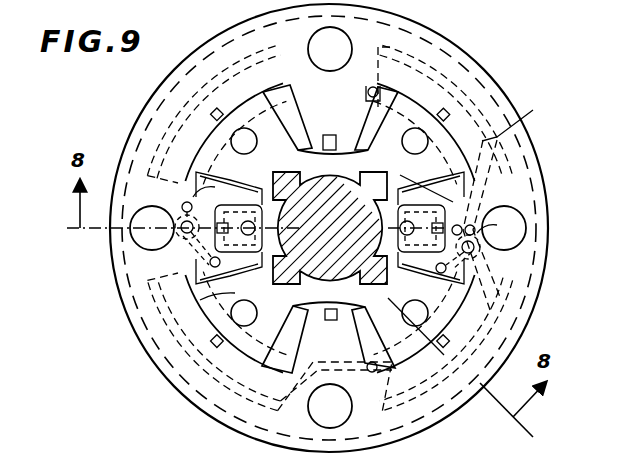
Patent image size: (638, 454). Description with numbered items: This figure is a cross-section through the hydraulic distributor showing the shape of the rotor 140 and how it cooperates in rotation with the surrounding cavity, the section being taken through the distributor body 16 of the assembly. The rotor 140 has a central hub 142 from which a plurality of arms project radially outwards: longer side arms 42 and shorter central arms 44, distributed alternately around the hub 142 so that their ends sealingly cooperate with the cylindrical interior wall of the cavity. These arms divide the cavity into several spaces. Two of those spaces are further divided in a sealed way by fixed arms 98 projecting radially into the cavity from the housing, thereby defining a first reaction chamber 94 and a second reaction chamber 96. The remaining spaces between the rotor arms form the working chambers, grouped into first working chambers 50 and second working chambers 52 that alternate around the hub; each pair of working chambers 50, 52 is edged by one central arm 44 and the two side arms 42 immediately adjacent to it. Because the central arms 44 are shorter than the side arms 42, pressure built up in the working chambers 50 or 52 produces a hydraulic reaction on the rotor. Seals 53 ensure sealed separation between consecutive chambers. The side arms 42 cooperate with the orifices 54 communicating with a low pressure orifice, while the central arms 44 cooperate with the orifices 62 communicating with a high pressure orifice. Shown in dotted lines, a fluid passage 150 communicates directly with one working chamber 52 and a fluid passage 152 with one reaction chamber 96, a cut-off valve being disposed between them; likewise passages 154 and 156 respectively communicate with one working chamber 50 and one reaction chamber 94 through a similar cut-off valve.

The rotor 16 is at (332, 274).
The side arm 42 is at (210, 142).
The central arm 44 is at (207, 247).
The first working chamber 50 is at (228, 188).
The second working chamber 52 is at (276, 278).
The seal 53 is at (219, 110).
The orifice 54 is at (340, 50).
The orifice 62 is at (255, 223).
The first reaction chamber 94 is at (363, 110).
The second reaction chamber 96 is at (290, 97).
The arm 98 is at (349, 127).
The rotor 140 is at (403, 114).
The central hub 142 is at (330, 228).
The fluid passage 150 is at (210, 207).
The fluid passage 152 is at (200, 300).
The passage 154 is at (477, 233).
The passage 156 is at (520, 118).